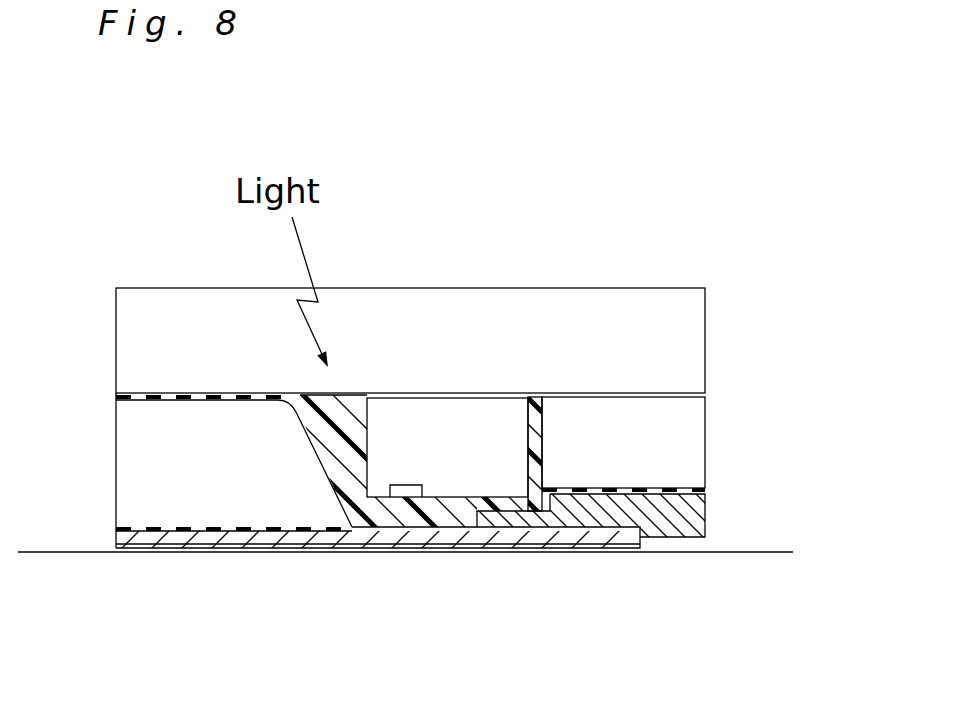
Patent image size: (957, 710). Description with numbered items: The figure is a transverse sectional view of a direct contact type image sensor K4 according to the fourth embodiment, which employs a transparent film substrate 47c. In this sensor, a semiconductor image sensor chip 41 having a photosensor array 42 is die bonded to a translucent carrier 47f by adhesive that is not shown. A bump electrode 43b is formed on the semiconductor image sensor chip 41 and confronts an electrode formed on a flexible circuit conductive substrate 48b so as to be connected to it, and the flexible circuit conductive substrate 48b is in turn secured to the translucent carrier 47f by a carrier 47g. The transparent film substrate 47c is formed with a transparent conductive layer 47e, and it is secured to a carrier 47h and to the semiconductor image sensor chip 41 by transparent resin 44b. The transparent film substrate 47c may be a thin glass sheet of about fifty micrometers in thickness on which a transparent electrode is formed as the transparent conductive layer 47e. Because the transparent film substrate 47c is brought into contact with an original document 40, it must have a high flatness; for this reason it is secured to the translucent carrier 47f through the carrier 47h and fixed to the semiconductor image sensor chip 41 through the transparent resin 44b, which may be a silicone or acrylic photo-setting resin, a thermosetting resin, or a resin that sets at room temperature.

The direct contact type image sensor K4 is at (770, 358).
The original document 40 is at (75, 575).
The semiconductor image sensor chip 41 is at (482, 397).
The photosensor array 42 is at (397, 500).
The bump electrode 43b is at (510, 513).
The transparent resin 44b is at (435, 513).
The transparent film substrate 47c is at (622, 542).
The transparent conductive layer 47e is at (582, 552).
The translucent carrier 47f is at (672, 340).
The carrier 47g is at (577, 420).
The carrier 47h is at (219, 505).
The flexible circuit conductive substrate 48b is at (697, 533).